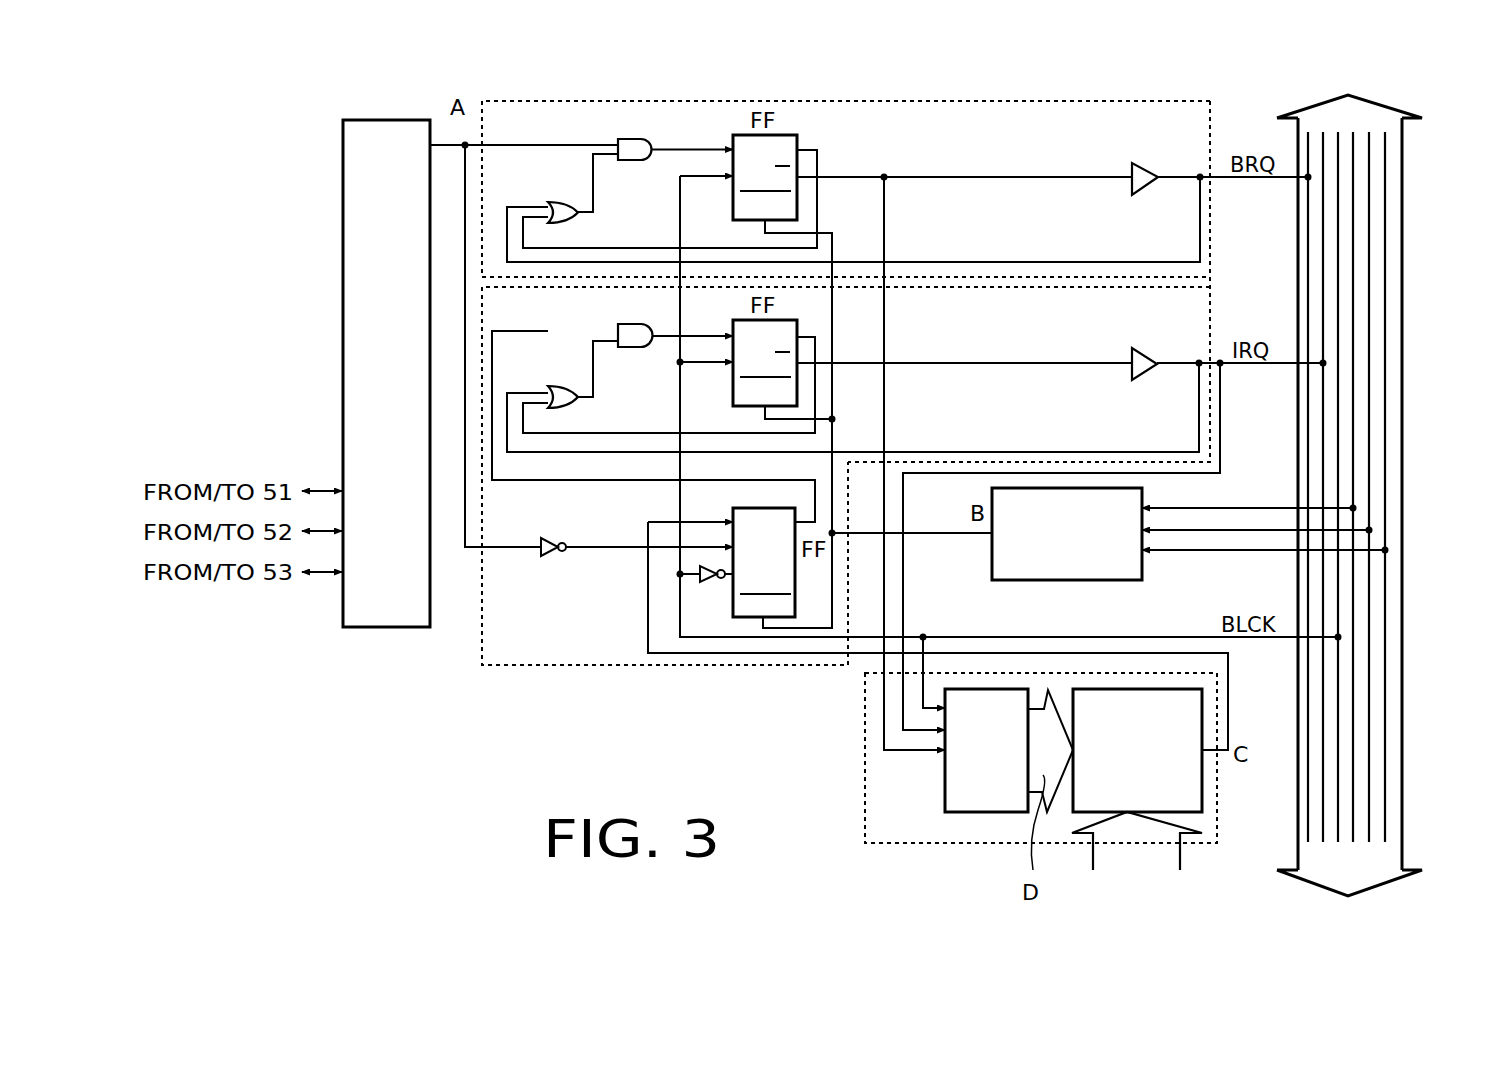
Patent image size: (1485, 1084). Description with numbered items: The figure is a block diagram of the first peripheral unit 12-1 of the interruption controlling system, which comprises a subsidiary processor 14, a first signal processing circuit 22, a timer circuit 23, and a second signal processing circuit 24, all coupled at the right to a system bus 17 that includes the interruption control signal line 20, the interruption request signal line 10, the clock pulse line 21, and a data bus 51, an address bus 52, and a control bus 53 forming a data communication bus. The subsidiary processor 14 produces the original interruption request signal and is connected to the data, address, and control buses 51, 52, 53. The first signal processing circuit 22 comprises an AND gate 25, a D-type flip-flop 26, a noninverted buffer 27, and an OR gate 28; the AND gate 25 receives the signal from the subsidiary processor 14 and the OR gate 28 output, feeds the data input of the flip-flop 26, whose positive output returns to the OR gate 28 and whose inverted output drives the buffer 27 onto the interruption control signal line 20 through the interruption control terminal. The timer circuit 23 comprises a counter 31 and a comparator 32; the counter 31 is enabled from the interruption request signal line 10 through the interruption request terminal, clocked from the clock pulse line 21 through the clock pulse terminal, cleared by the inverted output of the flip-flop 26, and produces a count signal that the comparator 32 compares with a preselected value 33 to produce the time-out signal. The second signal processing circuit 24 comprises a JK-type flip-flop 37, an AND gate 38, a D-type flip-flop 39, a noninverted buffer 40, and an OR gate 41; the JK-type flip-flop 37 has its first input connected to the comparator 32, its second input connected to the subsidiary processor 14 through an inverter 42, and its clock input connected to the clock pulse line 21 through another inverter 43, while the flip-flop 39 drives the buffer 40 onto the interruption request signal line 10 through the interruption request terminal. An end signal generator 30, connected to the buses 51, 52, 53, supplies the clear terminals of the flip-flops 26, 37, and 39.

The subsidiary processor 14 is at (370, 120).
The first signal processing circuit 22 is at (578, 100).
The second signal processing circuit 24 is at (508, 667).
The timer circuit 23 is at (946, 845).
The first peripheral unit 12-1 is at (1222, 108).
The AND gate 25 is at (638, 139).
The OR gate 28 is at (557, 202).
The D-type flip-flop 26 is at (733, 189).
The noninverted buffer 27 is at (1148, 172).
The AND gate 38 is at (640, 324).
The OR gate 41 is at (558, 386).
The D-type flip-flop 39 is at (733, 375).
The noninverted buffer 40 is at (1148, 358).
The JK-type flip-flop 37 is at (733, 512).
The inverter 42 is at (546, 556).
The inverter 43 is at (708, 582).
The end signal generator 30 is at (1142, 490).
The counter 31 is at (945, 775).
The comparator 32 is at (1202, 776).
The preselected value 33 is at (1180, 852).
The system bus 17 is at (1402, 190).
The interruption control signal line 20 is at (1300, 250).
The data bus 51 is at (1353, 253).
The address bus 52 is at (1370, 298).
The control bus 53 is at (1385, 347).
The interruption request signal line 10 is at (1402, 421).
The clock pulse line 21 is at (1444, 650).